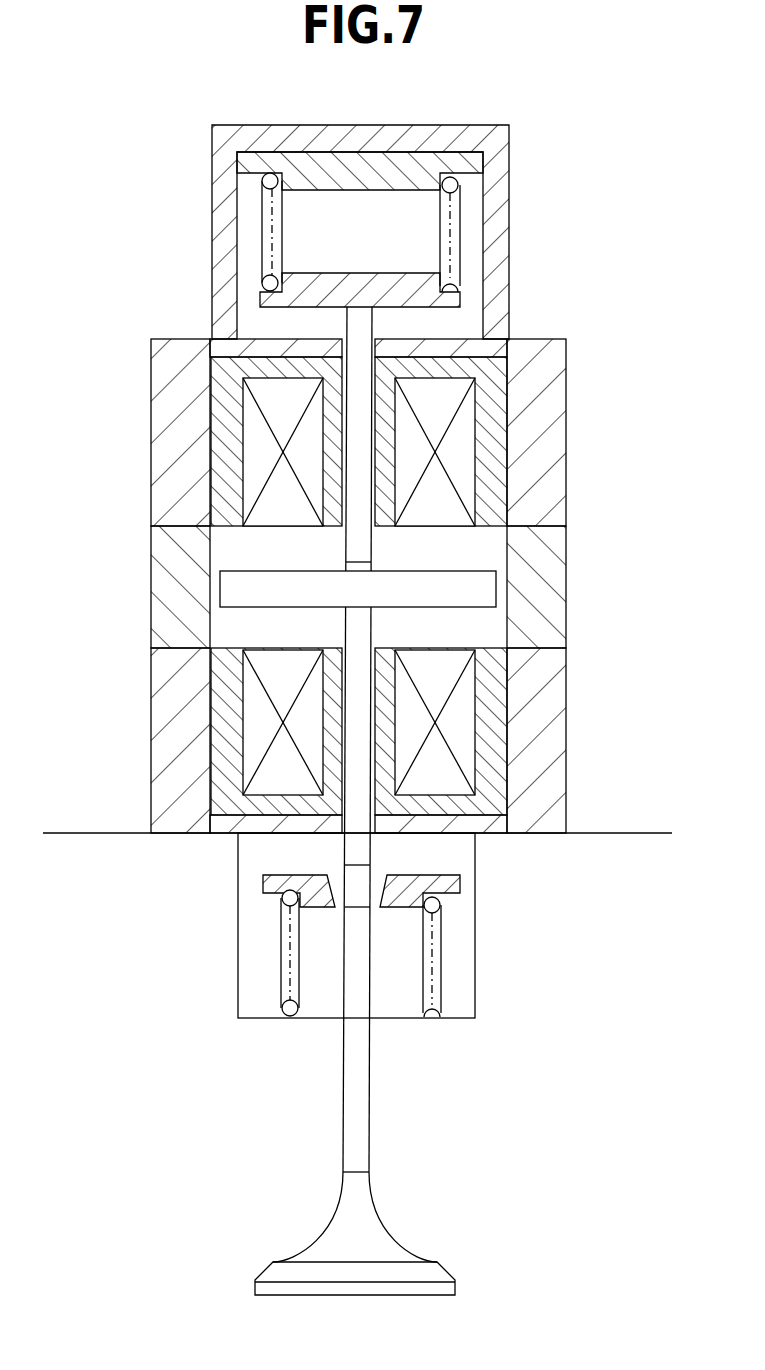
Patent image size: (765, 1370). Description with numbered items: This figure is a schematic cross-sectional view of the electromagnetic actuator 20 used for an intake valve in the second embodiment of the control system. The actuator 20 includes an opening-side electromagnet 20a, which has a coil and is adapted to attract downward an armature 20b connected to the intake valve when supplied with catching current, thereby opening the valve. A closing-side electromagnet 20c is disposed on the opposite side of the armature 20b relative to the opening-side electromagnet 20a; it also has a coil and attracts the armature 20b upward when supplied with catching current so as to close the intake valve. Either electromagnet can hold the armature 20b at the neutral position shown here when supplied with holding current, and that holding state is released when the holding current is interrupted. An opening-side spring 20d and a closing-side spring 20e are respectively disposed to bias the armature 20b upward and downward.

The electromagnetic actuator 20 is at (363, 710).
The opening-side electromagnet 20a is at (493, 748).
The armature 20b is at (485, 589).
The closing-side electromagnet 20c is at (493, 414).
The opening-side spring 20d is at (433, 906).
The closing-side spring 20e is at (452, 186).